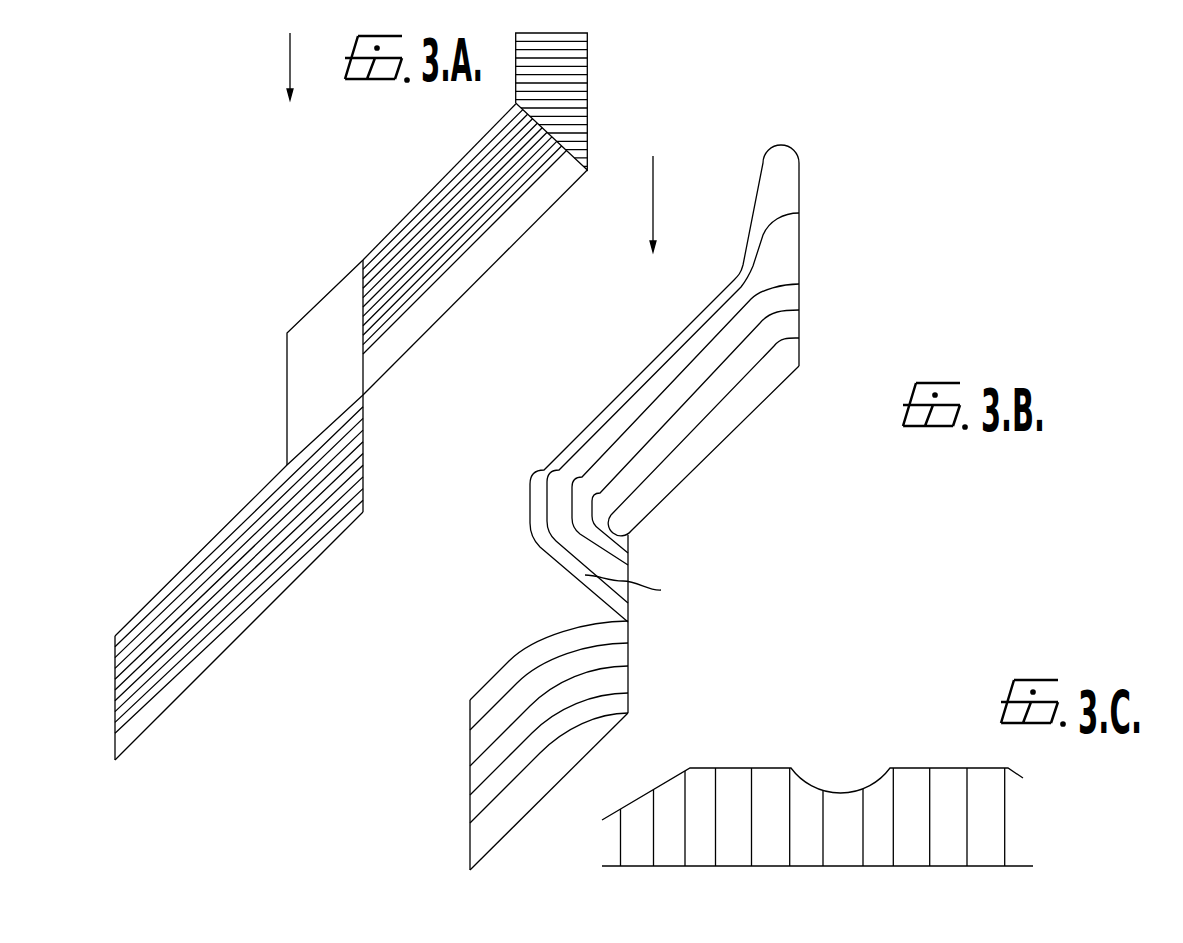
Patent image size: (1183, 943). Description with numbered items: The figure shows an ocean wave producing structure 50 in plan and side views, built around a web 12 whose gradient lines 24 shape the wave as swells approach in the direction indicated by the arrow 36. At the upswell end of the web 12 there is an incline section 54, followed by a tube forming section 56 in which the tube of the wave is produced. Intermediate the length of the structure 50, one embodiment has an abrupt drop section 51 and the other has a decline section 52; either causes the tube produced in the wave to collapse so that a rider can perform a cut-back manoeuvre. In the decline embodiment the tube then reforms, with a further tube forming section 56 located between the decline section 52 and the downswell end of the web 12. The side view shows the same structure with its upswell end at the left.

In FIG. 3A, the web 12 is at (100, 656).
In FIG. 3B, the web 12 is at (462, 780).
In FIG. 3B, the gradient lines 24 is at (791, 281).
In FIG. 3A, the arrow 36 is at (285, 62).
In FIG. 3B, the arrow 36 is at (650, 183).
In FIG. 3A, the ocean wave producing structure 50 is at (350, 396).
In FIG. 3B, the ocean wave producing structure 50 is at (674, 507).
In FIG. 3A, the abrupt drop section 51 is at (300, 393).
In FIG. 3B, the decline section 52 is at (639, 590).
In FIG. 3A, the incline section 54 is at (567, 93).
In FIG. 3B, the incline section 54 is at (787, 257).
In FIG. 3A, the tube forming section 56 is at (438, 287).
In FIG. 3B, the tube forming section 56 is at (705, 438).